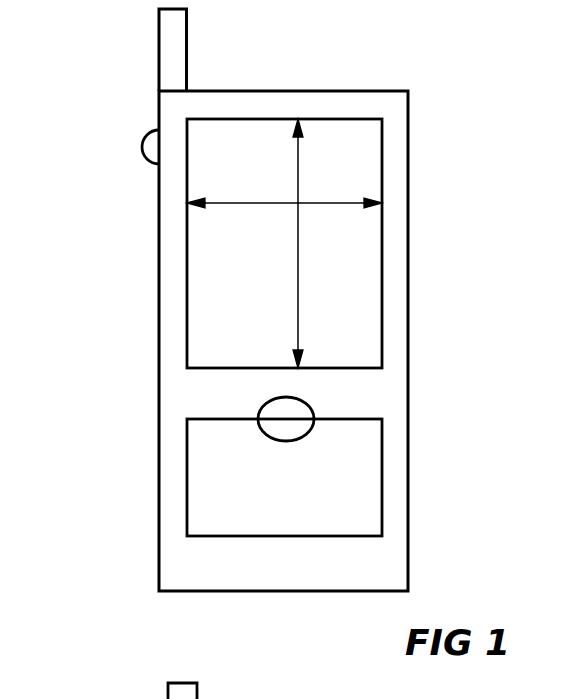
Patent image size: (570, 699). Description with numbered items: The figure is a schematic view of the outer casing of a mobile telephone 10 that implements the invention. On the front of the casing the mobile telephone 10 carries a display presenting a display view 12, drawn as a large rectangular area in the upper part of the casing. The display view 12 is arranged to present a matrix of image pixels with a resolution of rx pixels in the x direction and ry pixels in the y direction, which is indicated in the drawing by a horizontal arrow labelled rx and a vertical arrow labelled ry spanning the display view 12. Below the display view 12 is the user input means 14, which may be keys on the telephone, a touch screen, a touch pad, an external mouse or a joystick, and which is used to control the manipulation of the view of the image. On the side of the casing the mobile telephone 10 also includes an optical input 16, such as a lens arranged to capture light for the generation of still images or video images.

The mobile telephone 10 is at (438, 118).
The display view 12 is at (375, 255).
The user input means 14 is at (353, 480).
The optical input 16 is at (143, 148).